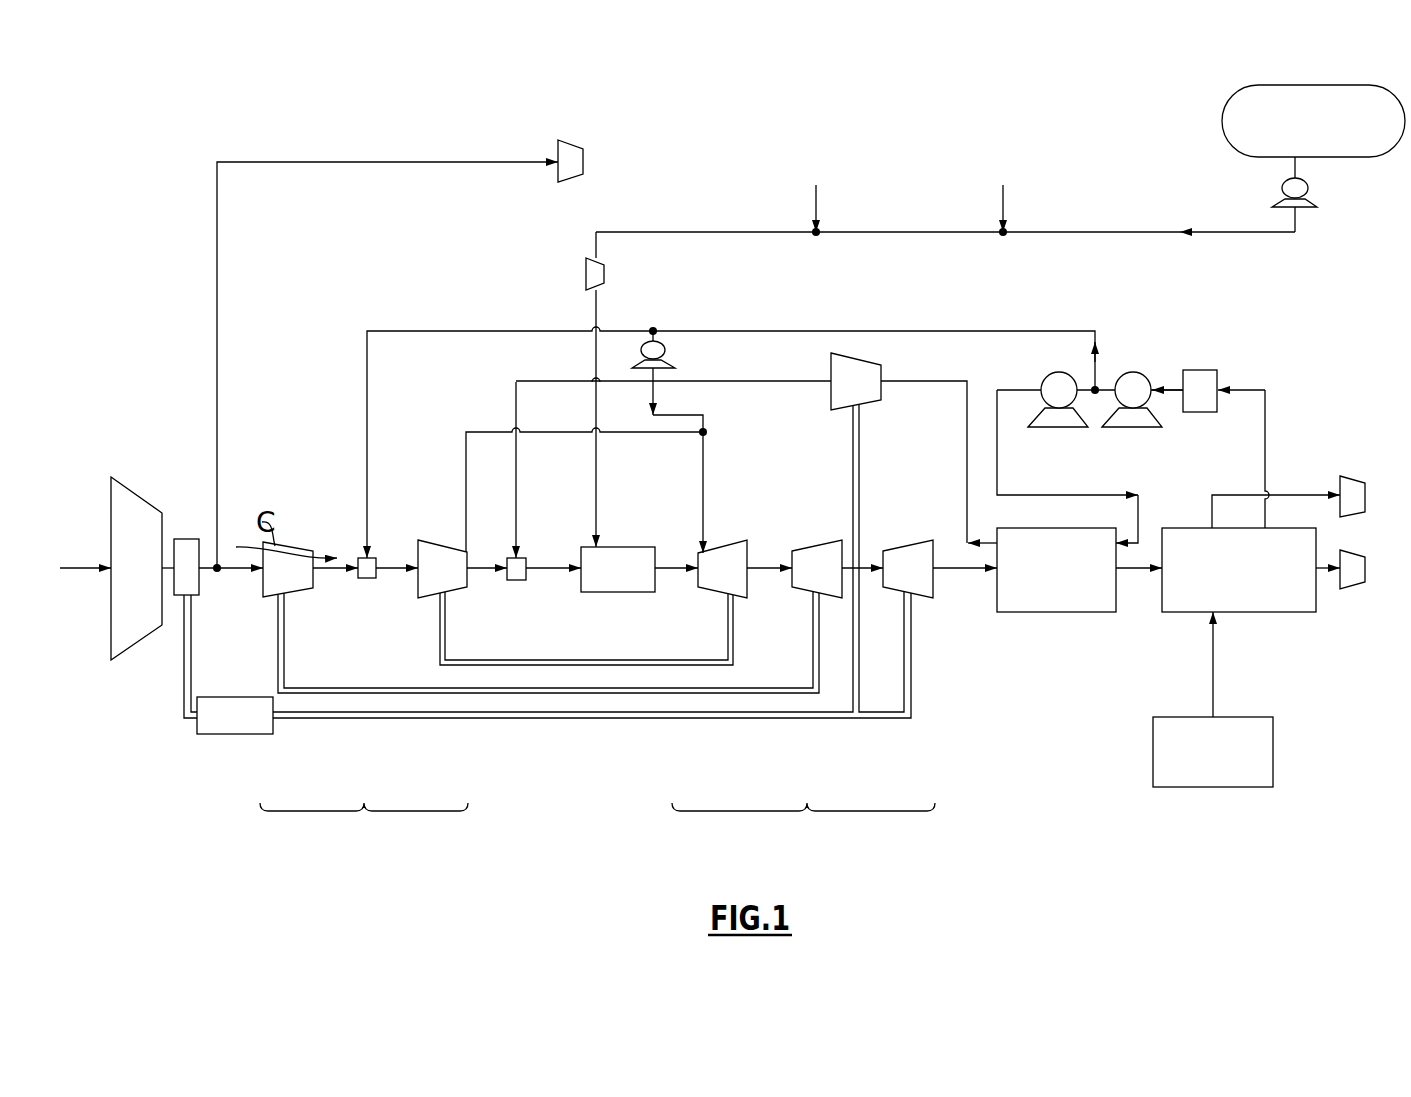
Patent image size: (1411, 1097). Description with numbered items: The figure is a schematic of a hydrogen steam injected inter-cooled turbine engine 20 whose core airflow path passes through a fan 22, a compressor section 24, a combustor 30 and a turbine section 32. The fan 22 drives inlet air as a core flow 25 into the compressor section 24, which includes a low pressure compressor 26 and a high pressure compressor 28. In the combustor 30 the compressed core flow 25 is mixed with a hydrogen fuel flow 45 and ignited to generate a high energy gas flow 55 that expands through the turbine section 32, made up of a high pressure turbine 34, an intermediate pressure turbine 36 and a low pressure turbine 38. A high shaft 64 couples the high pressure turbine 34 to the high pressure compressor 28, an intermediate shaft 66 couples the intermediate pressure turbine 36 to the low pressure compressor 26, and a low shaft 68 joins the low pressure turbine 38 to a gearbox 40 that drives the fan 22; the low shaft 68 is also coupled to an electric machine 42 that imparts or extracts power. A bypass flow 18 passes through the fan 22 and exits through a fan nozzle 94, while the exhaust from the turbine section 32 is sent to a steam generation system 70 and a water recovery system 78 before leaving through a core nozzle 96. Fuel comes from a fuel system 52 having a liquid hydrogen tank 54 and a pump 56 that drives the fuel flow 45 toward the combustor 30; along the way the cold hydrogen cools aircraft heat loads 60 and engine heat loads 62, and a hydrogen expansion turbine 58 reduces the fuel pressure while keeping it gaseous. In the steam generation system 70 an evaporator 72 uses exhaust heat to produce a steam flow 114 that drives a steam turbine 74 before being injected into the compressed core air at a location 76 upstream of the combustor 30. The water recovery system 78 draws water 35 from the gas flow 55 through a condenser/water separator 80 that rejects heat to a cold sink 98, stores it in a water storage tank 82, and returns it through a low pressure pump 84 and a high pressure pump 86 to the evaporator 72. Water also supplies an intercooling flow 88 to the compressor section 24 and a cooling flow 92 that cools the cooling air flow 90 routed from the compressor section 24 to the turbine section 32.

The bypass flow 18 is at (218, 352).
The hydrogen steam injected inter-cooled turbine engine 20 is at (217, 105).
The fan 22 is at (127, 630).
The compressor section 24 is at (364, 826).
The core flow 25 is at (338, 560).
The low pressure compressor 26 is at (300, 583).
The high pressure compressor 28 is at (455, 582).
The combustor 30 is at (615, 587).
The turbine section 32 is at (803, 826).
The high pressure turbine 34 is at (716, 583).
The water 35 is at (1266, 432).
The intermediate pressure turbine 36 is at (806, 583).
The low pressure turbine 38 is at (925, 585).
The gearbox 40 is at (196, 583).
The electric machine 42 is at (258, 725).
The hydrogen fuel flow 45 is at (598, 480).
The fuel system 52 is at (1153, 153).
The liquid hydrogen tank 54 is at (1360, 148).
The high energy gas flow 55 is at (675, 563).
The pump 56 is at (1300, 205).
The hydrogen expansion turbine 58 is at (604, 275).
The aircraft heat loads 60 is at (1002, 188).
The engine heat loads 62 is at (815, 188).
The high shaft 64 is at (502, 660).
The intermediate shaft 66 is at (521, 693).
The low shaft 68 is at (570, 717).
The steam generation system 70 is at (927, 378).
The evaporator 72 is at (1052, 612).
The steam turbine 74 is at (860, 395).
The steam injection location 76 is at (527, 560).
The water recovery system 78 is at (1300, 373).
The condenser/water separator 80 is at (1273, 604).
The water storage tank 82 is at (1194, 372).
The low pressure pump 84 is at (1135, 382).
The high pressure pump 86 is at (1061, 382).
The water intercooling flow 88 is at (446, 330).
The cooling air flow 90 is at (567, 433).
The cooling flow 92 is at (652, 330).
The fan nozzle 94 is at (581, 142).
The core nozzle 96 is at (1352, 587).
The cold sink 98 is at (1273, 752).
The steam flow 114 is at (516, 386).